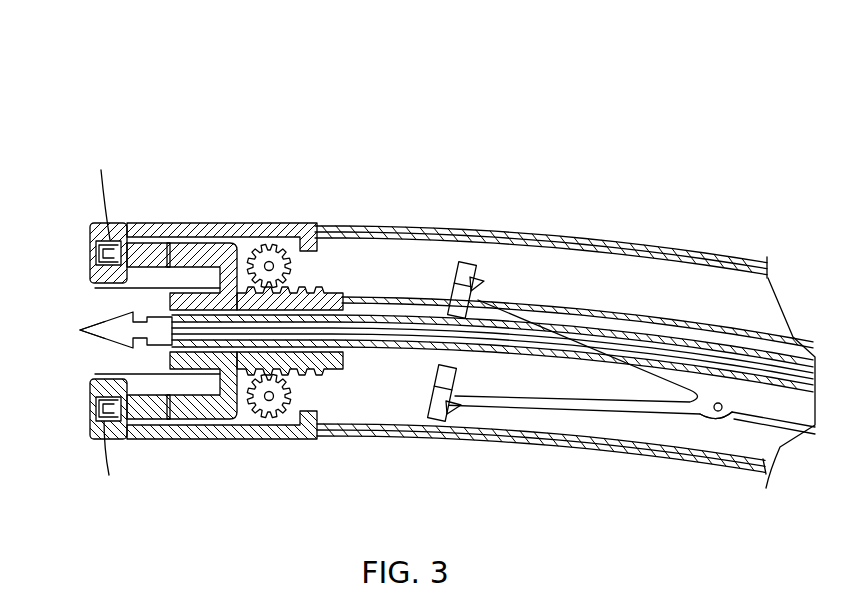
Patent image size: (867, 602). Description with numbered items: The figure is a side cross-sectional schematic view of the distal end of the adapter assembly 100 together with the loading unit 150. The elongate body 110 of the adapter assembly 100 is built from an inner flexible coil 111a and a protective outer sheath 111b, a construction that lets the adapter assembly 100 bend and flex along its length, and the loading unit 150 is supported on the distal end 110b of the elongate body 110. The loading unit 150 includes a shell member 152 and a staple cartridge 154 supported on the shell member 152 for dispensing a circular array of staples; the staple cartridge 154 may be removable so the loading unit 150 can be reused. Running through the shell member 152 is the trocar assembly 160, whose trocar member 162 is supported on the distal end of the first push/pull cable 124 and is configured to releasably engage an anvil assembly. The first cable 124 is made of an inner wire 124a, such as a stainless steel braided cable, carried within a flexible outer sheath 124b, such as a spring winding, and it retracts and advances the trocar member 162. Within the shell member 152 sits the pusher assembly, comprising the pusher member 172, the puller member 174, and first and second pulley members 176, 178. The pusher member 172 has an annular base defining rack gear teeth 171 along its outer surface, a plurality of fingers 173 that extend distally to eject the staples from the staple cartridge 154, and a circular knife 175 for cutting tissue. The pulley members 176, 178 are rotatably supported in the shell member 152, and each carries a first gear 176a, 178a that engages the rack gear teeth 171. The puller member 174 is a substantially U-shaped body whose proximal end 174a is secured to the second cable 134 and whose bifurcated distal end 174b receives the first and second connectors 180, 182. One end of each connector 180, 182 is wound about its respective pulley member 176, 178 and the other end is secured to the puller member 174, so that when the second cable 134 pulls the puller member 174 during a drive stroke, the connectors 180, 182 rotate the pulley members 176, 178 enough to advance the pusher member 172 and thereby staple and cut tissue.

The adapter assembly 100 is at (547, 113).
The elongate body 110 is at (614, 220).
The distal end of the elongate body 110b is at (333, 228).
The inner flexible coil 111a is at (490, 238).
The protective outer sheath 111b is at (492, 230).
The first push/pull cable 124 is at (717, 340).
The inner wire 124a is at (772, 368).
The outer sheath 124b is at (752, 352).
The second cable 134 is at (787, 440).
The loading unit 150 is at (186, 215).
The shell member 152 is at (213, 230).
The staple cartridge 154 is at (92, 437).
The trocar assembly 160 is at (87, 324).
The trocar member 162 is at (90, 336).
The rack gear teeth 171 is at (277, 275).
The pusher member 172 is at (340, 372).
The fingers 173 is at (142, 247).
The puller member 174 is at (213, 418).
The proximal end of the puller member 174a is at (714, 420).
The bifurcated distal end of the puller member 174b is at (476, 300).
The circular knife 175 is at (120, 375).
The first pulley member 176 is at (265, 244).
The first gear of the first pulley member 176a is at (282, 246).
The second pulley member 178 is at (260, 420).
The first gear of the second pulley member 178a is at (277, 408).
The first connector 180 is at (374, 250).
The second connector 182 is at (398, 432).